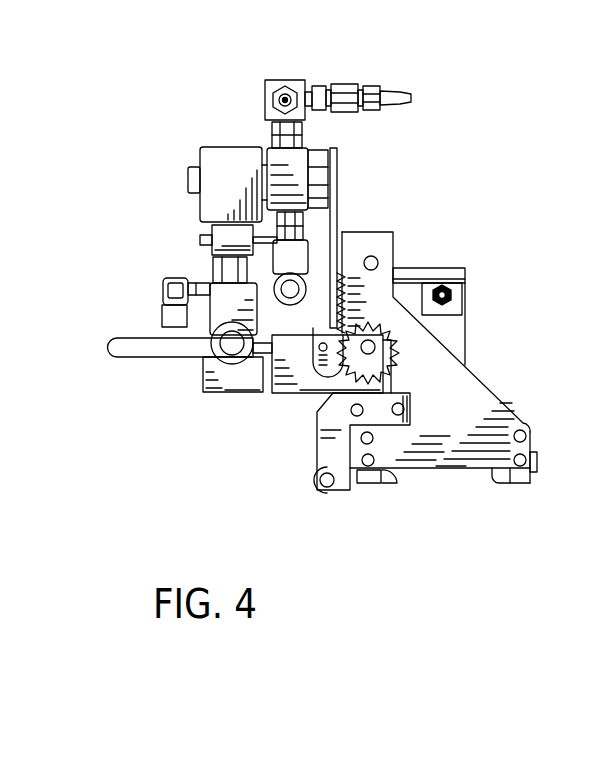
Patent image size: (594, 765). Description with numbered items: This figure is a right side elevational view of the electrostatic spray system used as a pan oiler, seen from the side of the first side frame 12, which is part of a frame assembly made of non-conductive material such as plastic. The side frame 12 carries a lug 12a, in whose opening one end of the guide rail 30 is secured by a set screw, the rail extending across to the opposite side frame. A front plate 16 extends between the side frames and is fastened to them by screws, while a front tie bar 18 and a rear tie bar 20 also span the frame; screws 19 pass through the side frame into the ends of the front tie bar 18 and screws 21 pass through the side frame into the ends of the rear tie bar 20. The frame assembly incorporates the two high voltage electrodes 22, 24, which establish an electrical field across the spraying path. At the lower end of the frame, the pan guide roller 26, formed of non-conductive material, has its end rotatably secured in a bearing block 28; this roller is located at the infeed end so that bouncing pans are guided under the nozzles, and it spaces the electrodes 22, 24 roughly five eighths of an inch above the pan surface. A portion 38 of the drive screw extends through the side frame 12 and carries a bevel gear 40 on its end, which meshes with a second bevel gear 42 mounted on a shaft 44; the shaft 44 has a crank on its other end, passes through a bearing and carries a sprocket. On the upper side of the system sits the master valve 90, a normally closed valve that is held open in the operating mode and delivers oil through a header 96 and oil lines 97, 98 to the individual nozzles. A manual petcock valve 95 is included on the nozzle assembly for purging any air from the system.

The first side frame 12 is at (492, 410).
The lug 12a is at (382, 232).
The front plate 16 is at (343, 234).
The front tie bar 18 is at (370, 484).
The screws 19 is at (374, 440).
The rear tie bar 20 is at (536, 474).
The screws 21 is at (528, 462).
The high voltage electrode 22 is at (392, 484).
The high voltage electrode 24 is at (500, 482).
The pan guide roller 26 is at (320, 498).
The bearing block 28 is at (325, 458).
The guide rail 30 is at (380, 262).
The portion of drive screw 38 is at (392, 362).
The bevel gear 40 is at (392, 345).
The second bevel gear 42 is at (312, 368).
The shaft 44 is at (152, 345).
The master valve 90 is at (282, 170).
The manual petcock valve 95 is at (166, 283).
The header 96 is at (268, 82).
The oil line 97 is at (286, 98).
The oil line 98 is at (376, 94).